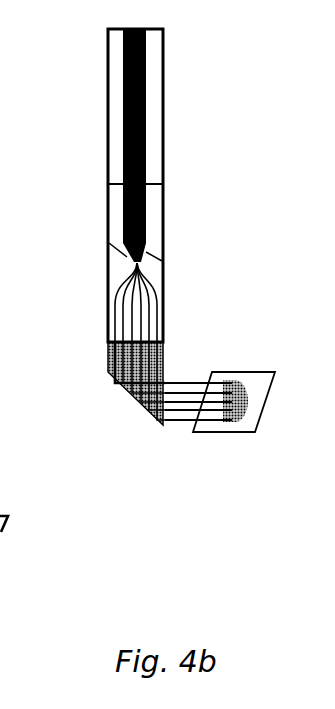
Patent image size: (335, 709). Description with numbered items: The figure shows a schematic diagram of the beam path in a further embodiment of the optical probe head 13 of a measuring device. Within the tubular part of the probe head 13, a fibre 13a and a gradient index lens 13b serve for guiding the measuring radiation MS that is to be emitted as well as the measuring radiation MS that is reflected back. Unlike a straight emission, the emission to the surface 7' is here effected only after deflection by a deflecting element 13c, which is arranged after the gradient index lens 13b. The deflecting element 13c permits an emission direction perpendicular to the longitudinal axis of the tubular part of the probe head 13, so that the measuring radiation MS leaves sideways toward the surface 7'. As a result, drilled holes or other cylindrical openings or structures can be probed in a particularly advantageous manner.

The optical probe head 13 is at (76, 314).
The fibre 13a is at (81, 145).
The gradient index lens 13b is at (80, 286).
The deflecting element 13c is at (100, 398).
The measuring radiation MS is at (206, 383).
The surface 7' is at (196, 422).